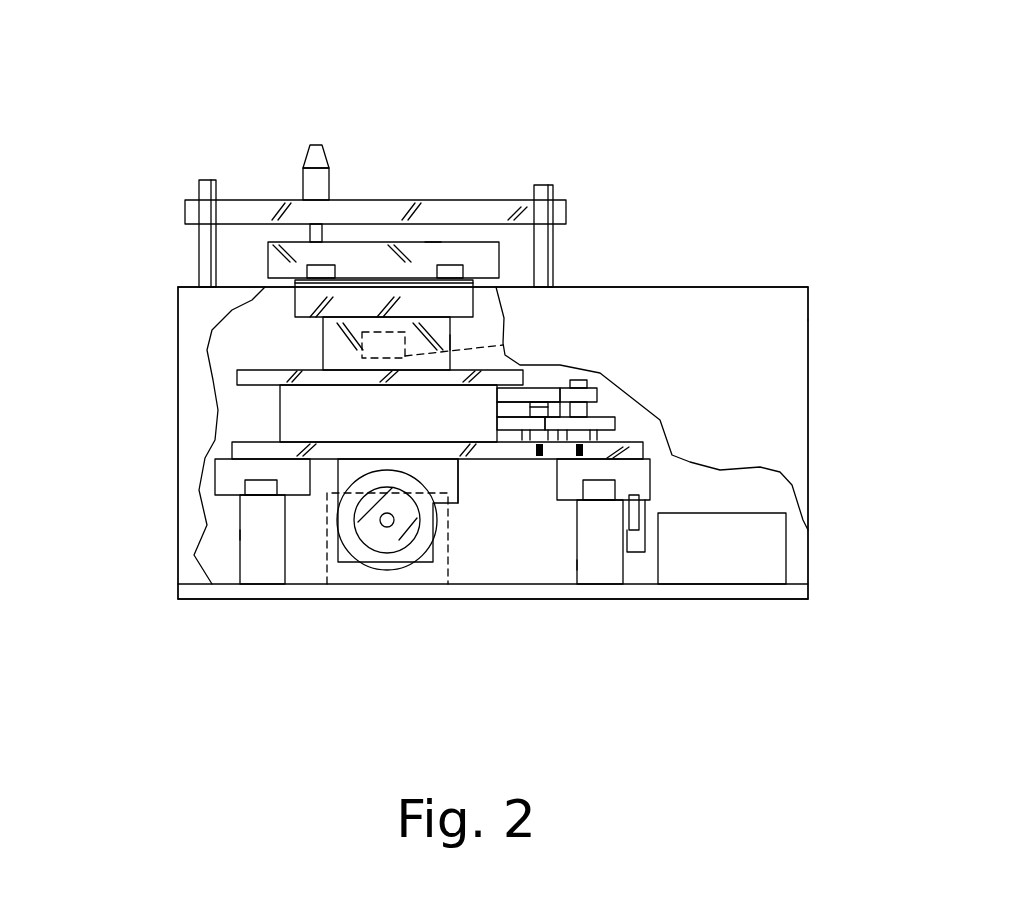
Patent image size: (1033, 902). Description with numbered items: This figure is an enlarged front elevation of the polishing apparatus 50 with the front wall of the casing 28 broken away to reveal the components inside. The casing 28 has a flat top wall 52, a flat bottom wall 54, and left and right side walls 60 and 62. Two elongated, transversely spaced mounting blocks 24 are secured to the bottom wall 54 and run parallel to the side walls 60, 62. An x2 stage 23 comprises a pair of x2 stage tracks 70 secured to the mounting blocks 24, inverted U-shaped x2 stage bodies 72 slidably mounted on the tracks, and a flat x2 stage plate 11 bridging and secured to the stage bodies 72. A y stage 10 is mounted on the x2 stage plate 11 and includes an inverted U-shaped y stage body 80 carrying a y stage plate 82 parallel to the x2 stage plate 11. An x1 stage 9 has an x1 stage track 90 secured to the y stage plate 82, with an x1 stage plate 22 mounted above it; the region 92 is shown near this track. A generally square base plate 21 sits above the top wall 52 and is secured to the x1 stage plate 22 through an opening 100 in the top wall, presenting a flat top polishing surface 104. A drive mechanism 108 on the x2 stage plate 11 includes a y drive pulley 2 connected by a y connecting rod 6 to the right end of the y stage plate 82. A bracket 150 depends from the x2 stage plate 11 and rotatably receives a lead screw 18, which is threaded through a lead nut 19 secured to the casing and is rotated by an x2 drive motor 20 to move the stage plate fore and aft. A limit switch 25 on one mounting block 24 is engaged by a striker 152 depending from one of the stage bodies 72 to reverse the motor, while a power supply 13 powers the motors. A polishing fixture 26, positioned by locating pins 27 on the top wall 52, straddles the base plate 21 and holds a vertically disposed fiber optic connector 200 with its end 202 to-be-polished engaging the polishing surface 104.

The y drive pulley 2 is at (613, 412).
The y connecting rod 6 is at (527, 388).
The x1 stage 9 is at (320, 345).
The y stage 10 is at (262, 420).
The x2 stage plate 11 is at (232, 444).
The power supply 13 is at (786, 548).
The lead screw 18 is at (383, 527).
The lead nut 19 is at (323, 560).
The x2 drive motor 20 is at (395, 572).
The base plate 21 is at (499, 253).
The x1 stage plate 22 is at (295, 298).
The x2 stage 23 is at (195, 466).
The mounting blocks 24 is at (240, 535).
The limit switch 25 is at (638, 542).
The polishing fixture 26 is at (570, 208).
The locating pins 27 is at (203, 182).
The casing 28 is at (808, 287).
The polishing apparatus 50 is at (822, 138).
The top wall 52 is at (663, 287).
The bottom wall 54 is at (683, 600).
The left side wall 60 is at (178, 367).
The right side wall 62 is at (810, 360).
The x2 stage tracks 70 is at (263, 497).
The x2 stage bodies 72 is at (215, 478).
The y stage body 80 is at (365, 414).
The y stage plate 82 is at (237, 370).
The x1 stage track 90 is at (450, 342).
The slot 92 is at (490, 322).
The opening 100 is at (297, 283).
The top polishing surface 104 is at (433, 242).
The drive mechanism 108 is at (612, 355).
The bracket 150 is at (460, 463).
The striker 152 is at (638, 490).
The fiber optic connector 200 is at (307, 145).
The end to-be-polished 202 is at (330, 236).